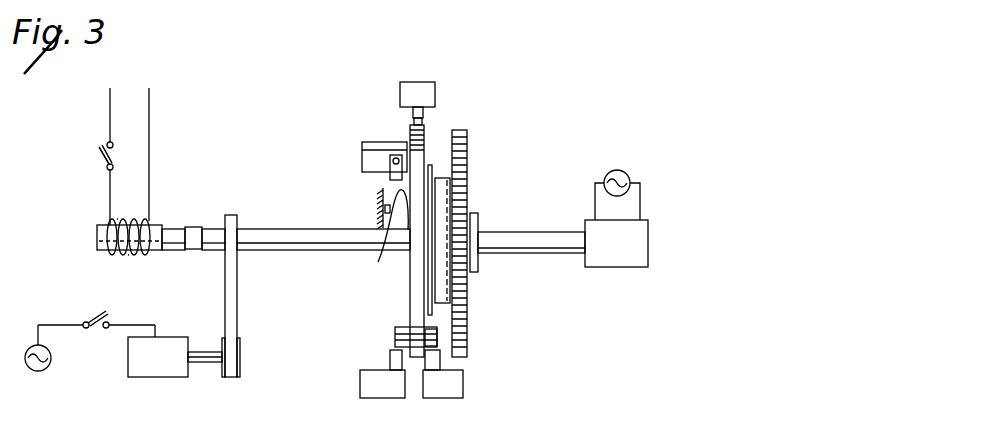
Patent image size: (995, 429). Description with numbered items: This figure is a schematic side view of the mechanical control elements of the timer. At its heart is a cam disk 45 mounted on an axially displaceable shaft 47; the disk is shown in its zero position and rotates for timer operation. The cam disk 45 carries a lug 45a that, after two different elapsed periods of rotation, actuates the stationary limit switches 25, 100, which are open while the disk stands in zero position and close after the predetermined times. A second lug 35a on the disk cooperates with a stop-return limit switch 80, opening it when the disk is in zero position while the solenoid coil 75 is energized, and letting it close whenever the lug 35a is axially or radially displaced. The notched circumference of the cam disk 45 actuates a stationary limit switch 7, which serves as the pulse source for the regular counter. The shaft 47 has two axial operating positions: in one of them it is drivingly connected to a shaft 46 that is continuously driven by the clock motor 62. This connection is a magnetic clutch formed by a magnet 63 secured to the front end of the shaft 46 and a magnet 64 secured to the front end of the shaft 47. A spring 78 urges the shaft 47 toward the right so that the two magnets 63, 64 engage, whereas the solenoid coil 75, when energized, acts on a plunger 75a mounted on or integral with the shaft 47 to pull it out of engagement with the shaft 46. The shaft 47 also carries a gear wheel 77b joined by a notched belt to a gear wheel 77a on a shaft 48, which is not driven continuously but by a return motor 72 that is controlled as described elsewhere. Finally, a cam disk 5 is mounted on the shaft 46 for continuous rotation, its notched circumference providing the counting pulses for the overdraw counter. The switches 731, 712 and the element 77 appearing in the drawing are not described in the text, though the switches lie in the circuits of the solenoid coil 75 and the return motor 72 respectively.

The switch 731 is at (106, 168).
The solenoid coil 75 is at (123, 221).
The plunger 75a is at (154, 233).
The shaft 47 is at (284, 236).
The gear wheel 77b is at (224, 258).
The plate 77 is at (227, 303).
The gear wheel 77a is at (243, 370).
The shaft 48 is at (201, 358).
The motor 72 is at (148, 351).
The switch 712 is at (98, 312).
The limit switch 7 is at (428, 90).
The cam disk 45 is at (409, 305).
The limit switch 100 is at (363, 155).
The spring 78 is at (378, 262).
The magnet 64 is at (431, 312).
The magnet 63 is at (437, 177).
The cam disk 5 is at (468, 162).
The shaft 46 is at (540, 241).
The clock motor 62 is at (643, 259).
The lug 45a is at (400, 337).
The lug 35a is at (432, 336).
The limit switch 25 is at (378, 385).
The stop-return limit switch 80 is at (448, 392).